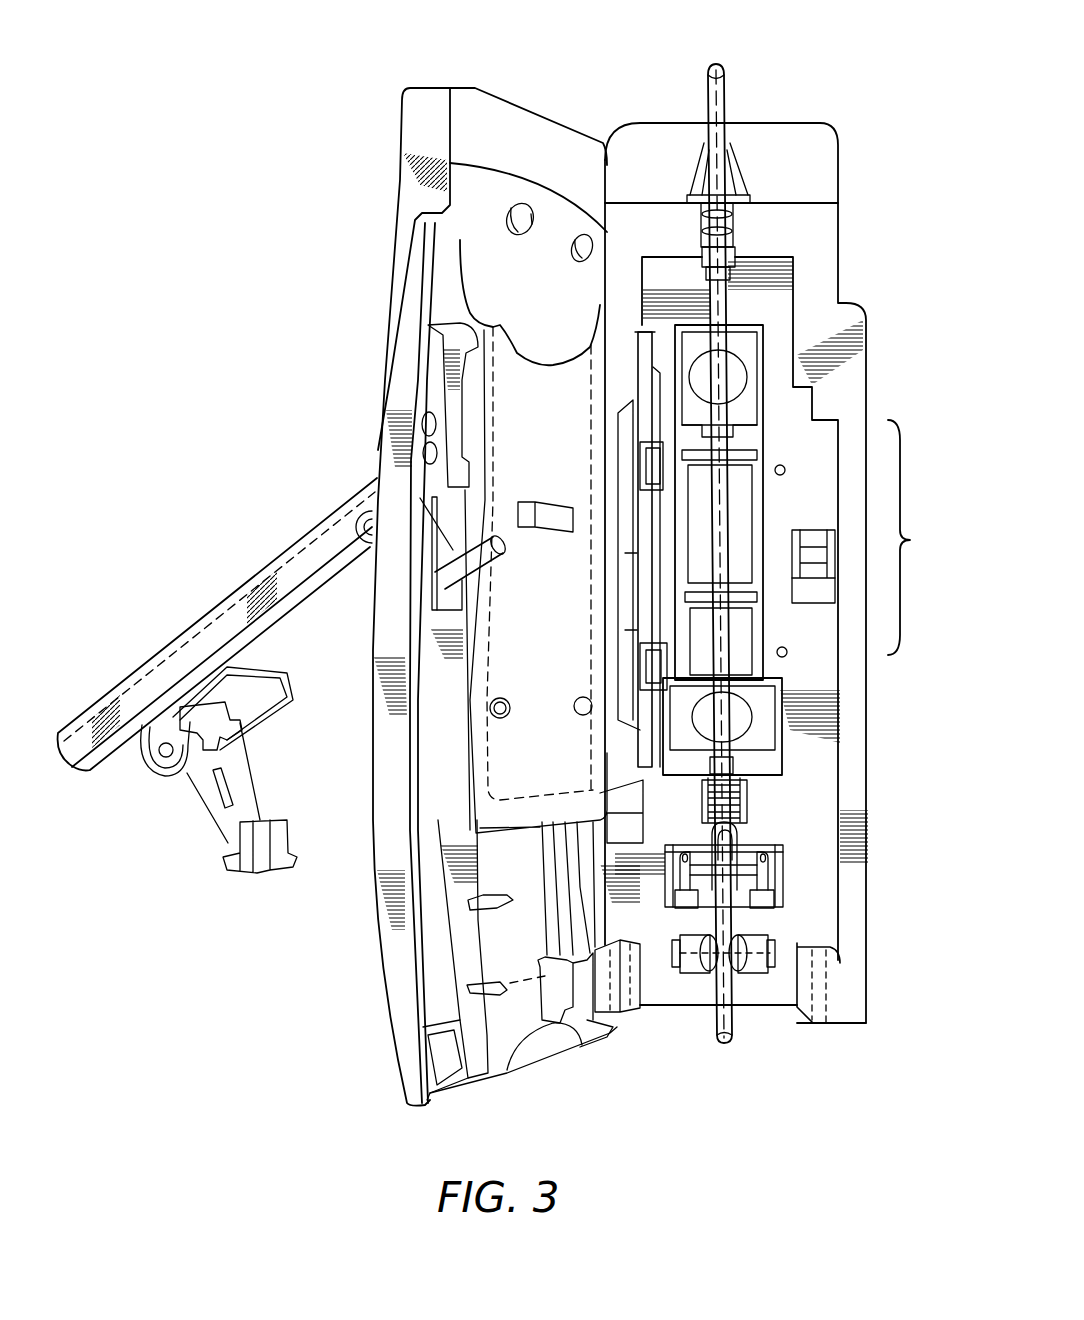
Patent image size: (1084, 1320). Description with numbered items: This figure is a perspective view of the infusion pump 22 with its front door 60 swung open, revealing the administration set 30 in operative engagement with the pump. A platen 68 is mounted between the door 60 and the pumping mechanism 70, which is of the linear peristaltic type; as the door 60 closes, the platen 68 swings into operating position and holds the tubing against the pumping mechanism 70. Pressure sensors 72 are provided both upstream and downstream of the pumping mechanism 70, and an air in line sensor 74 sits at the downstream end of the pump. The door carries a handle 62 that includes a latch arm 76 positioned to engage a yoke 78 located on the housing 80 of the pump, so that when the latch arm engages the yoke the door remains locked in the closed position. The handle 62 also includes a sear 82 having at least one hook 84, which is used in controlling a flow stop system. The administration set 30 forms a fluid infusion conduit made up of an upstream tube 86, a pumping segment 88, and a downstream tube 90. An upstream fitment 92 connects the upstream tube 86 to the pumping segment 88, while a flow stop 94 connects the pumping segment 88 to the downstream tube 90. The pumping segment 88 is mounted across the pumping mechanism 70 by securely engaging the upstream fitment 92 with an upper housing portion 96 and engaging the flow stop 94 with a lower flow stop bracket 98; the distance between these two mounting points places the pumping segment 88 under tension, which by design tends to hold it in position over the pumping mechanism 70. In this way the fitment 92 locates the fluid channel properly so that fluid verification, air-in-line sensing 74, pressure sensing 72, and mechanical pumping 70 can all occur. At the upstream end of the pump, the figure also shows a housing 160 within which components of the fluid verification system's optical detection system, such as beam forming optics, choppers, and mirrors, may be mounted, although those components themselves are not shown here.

The infusion pump 22 is at (838, 185).
The administration set 30 is at (733, 72).
The front door 60 is at (423, 88).
The handle 62 is at (247, 567).
The platen 68 is at (637, 367).
The pumping mechanism 70 is at (945, 553).
The pressure sensors 72 is at (748, 368).
The air in line sensor 74 is at (780, 922).
The latch arm 76 is at (455, 550).
The yoke 78 is at (800, 547).
The housing 80 is at (868, 985).
The sear 82 is at (193, 803).
The hook 84 is at (237, 842).
The upstream tube 86 is at (707, 108).
The pumping segment 88 is at (723, 640).
The downstream tube 90 is at (737, 1027).
The upstream fitment 92 is at (740, 165).
The flow stop 94 is at (785, 850).
The upper housing portion 96 is at (738, 222).
The flow stop bracket 98 is at (780, 903).
The housing 160 is at (623, 122).